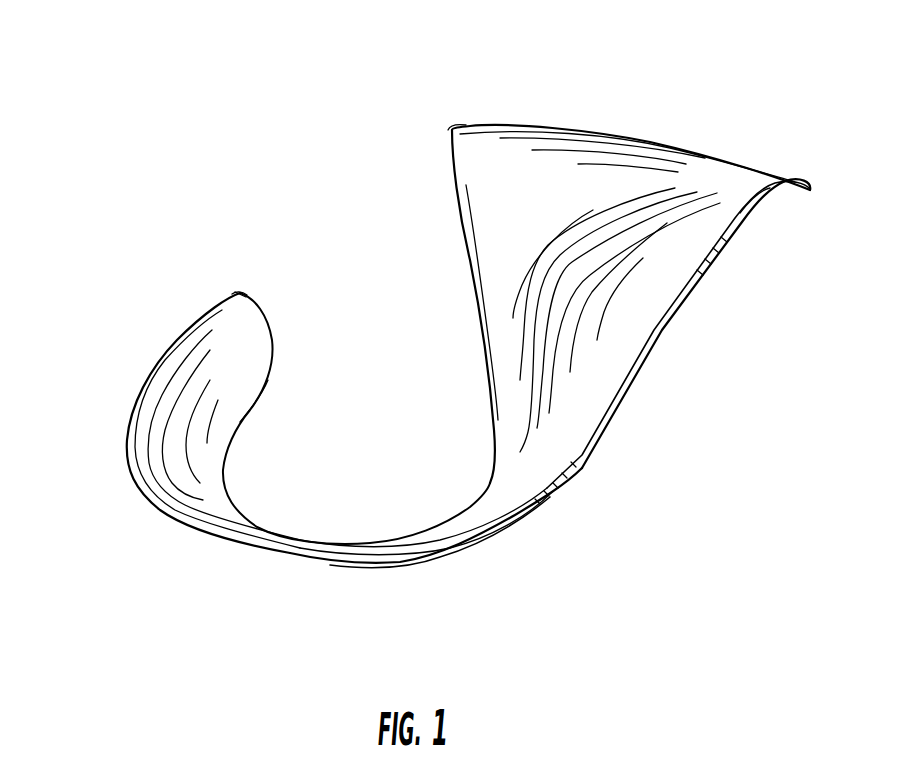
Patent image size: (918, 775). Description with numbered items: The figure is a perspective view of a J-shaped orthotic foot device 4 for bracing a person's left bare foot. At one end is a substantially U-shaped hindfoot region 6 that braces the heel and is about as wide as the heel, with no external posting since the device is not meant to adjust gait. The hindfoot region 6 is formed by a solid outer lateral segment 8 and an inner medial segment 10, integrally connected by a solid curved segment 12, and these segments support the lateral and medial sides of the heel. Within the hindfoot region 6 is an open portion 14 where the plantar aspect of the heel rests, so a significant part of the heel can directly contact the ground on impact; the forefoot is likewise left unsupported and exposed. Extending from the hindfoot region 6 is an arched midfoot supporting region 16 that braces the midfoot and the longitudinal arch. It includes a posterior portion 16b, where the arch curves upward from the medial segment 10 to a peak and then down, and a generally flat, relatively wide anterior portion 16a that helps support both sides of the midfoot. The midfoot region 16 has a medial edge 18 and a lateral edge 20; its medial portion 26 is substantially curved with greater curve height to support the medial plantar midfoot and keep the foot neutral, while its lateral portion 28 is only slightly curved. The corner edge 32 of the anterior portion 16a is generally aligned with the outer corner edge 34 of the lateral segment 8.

The orthotic foot device 4 is at (758, 92).
The hindfoot region 6 is at (97, 568).
The lateral segment 8 is at (187, 427).
The medial segment 10 is at (550, 488).
The curved segment 12 is at (264, 547).
The open portion 14 is at (356, 440).
The arched midfoot supporting region 16 is at (835, 184).
The anterior portion 16a is at (770, 188).
The posterior portion 16b is at (620, 402).
The medial edge 18 is at (652, 348).
The lateral edge 20 is at (473, 312).
The medial portion 26 is at (615, 282).
The lateral portion 28 is at (528, 237).
The corner edge 32 is at (452, 129).
The outer corner edge 34 is at (238, 293).